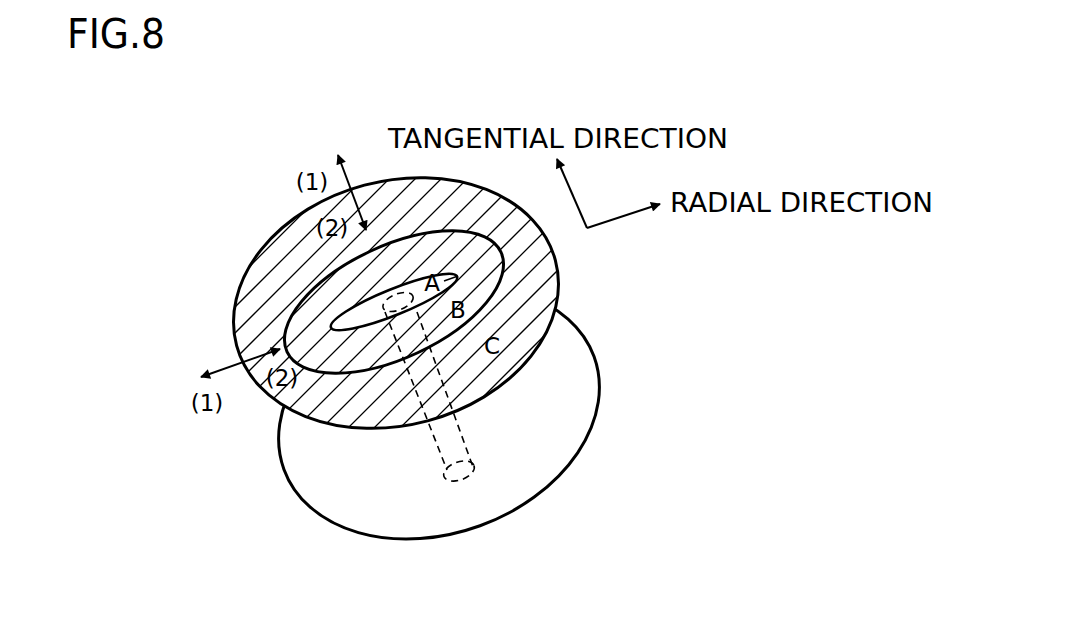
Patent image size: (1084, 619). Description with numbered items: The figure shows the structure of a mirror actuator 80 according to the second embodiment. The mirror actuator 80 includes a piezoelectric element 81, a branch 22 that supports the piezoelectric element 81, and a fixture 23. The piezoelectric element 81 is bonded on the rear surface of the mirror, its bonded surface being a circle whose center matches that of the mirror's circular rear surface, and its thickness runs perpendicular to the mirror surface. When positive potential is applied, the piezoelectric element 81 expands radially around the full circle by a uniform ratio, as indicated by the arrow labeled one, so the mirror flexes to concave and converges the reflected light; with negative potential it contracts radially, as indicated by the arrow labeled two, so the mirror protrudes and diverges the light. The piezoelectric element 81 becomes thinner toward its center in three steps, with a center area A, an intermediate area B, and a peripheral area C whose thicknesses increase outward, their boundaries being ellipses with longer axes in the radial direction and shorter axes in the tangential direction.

The mirror actuator 80 is at (467, 334).
The piezoelectric element 81 is at (555, 297).
The branch 22 is at (450, 427).
The fixture 23 is at (532, 497).